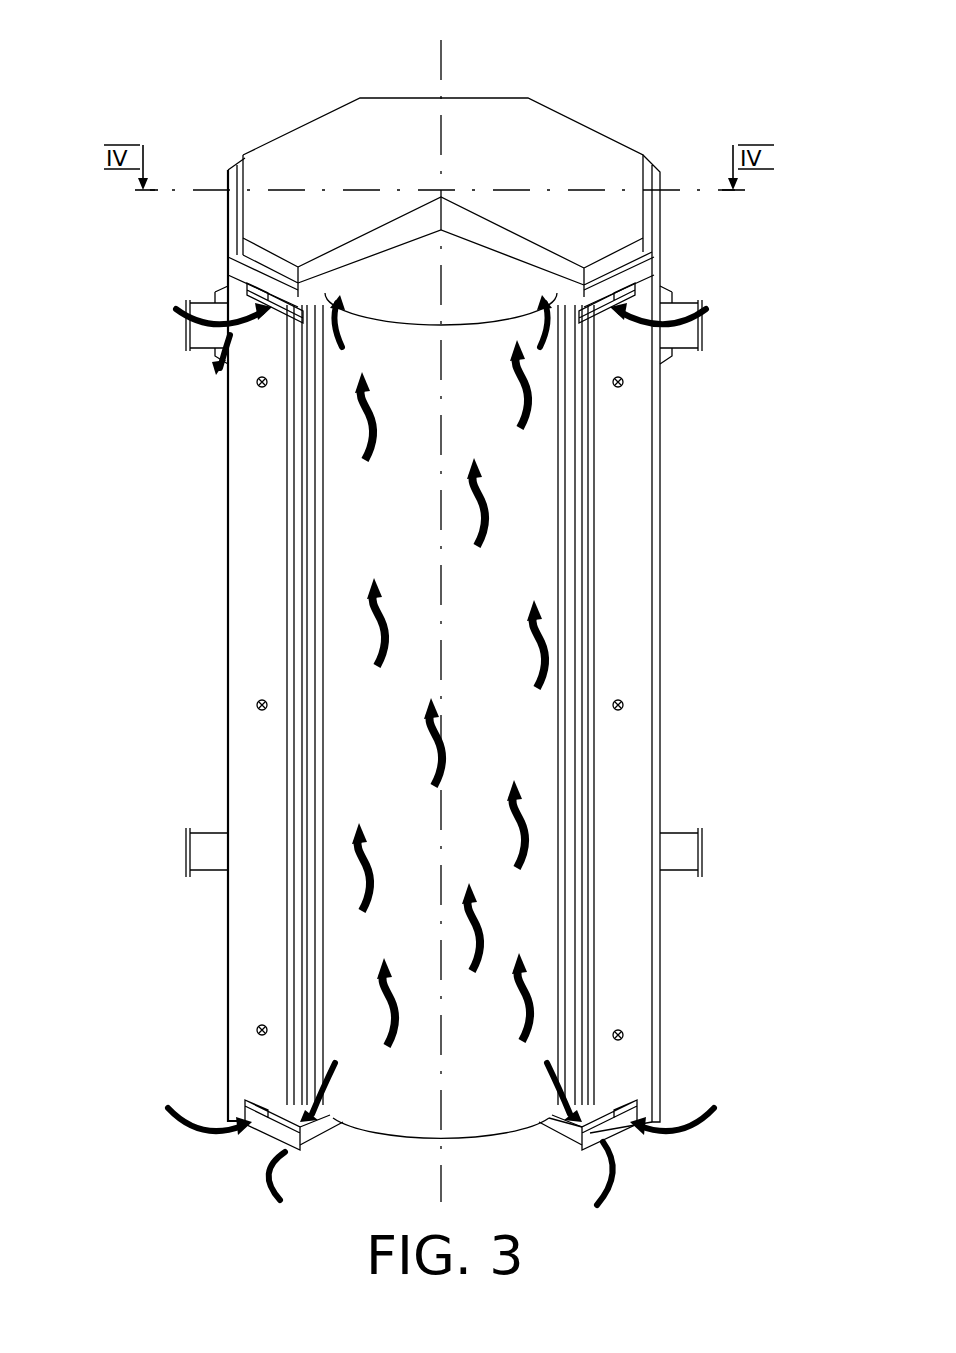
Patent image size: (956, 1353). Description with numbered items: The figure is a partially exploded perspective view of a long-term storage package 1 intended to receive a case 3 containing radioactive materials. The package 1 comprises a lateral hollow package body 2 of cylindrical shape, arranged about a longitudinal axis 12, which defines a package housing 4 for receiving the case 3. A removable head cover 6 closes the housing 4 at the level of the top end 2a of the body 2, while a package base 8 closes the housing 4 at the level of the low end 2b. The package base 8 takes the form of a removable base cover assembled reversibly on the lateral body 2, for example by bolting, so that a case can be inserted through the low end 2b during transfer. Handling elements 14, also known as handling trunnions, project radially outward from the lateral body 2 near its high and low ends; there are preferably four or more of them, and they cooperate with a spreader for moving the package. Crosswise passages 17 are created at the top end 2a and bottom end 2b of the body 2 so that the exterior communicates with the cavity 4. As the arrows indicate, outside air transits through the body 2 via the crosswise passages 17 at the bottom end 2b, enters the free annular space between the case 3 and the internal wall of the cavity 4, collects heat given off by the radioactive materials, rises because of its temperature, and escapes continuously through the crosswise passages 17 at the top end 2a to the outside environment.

The long-term storage package 1 is at (248, 140).
The lateral hollow package body 2 is at (250, 642).
The top end 2a is at (252, 288).
The low end 2b is at (645, 1070).
The case 3 is at (538, 528).
The package housing 4 is at (328, 489).
The removable head cover 6 is at (582, 138).
The package base 8 is at (558, 1141).
The longitudinal axis 12 is at (442, 53).
The handling elements 14 is at (185, 330).
The crosswise passages 17 is at (258, 292).